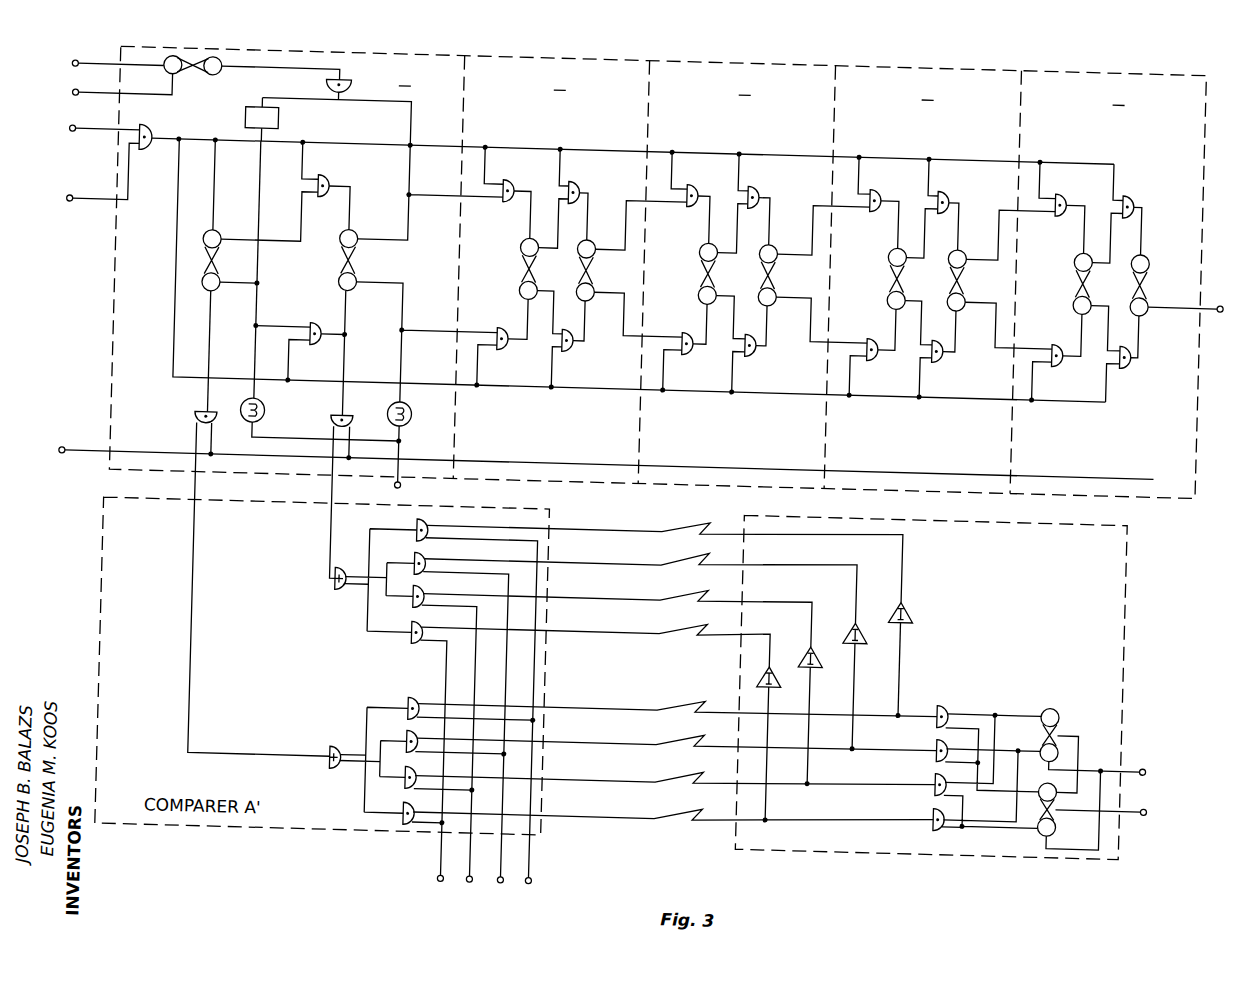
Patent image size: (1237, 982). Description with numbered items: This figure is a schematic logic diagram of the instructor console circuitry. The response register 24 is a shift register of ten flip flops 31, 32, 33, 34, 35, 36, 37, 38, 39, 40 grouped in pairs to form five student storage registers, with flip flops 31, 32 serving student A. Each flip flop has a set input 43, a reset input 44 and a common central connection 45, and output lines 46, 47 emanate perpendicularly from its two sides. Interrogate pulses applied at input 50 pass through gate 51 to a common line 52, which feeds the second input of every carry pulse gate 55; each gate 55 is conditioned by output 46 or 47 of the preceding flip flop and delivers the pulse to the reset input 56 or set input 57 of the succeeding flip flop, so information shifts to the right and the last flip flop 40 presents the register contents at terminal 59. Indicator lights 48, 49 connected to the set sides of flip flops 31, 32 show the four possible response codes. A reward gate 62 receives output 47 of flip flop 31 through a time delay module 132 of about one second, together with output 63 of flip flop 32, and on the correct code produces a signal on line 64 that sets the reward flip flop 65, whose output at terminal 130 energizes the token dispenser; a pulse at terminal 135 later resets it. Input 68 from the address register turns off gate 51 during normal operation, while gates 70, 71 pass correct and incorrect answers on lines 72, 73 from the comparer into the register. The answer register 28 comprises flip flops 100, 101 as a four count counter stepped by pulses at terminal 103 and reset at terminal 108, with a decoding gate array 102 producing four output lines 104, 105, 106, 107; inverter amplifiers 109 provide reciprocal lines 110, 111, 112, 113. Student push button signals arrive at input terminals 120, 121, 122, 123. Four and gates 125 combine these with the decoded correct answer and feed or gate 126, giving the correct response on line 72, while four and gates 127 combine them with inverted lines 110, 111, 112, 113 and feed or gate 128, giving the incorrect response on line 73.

The response register 24 is at (1140, 484).
The answer register 28 is at (1128, 571).
The flip flop 31 is at (198, 298).
The flip flop 32 is at (333, 299).
The flip flop 33 is at (513, 293).
The flip flop 34 is at (591, 289).
The flip flop 35 is at (692, 292).
The flip flop 36 is at (769, 292).
The flip flop 37 is at (881, 292).
The flip flop 38 is at (962, 290).
The flip flop 39 is at (1067, 292).
The last flip flop 40 is at (1145, 289).
The set input 43 is at (203, 310).
The reset input 44 is at (198, 242).
The common central connection 45 is at (197, 272).
The output line 46 is at (248, 239).
The output line 47 is at (226, 295).
The indicator light 48 is at (262, 425).
The indicator light 49 is at (410, 420).
The input 50 is at (60, 143).
The gate 51 is at (137, 138).
The common line 52 is at (776, 150).
The carry pulse gate 55 is at (319, 184).
The reset input 56 is at (349, 237).
The set input 57 is at (353, 299).
The terminal 59 is at (1214, 298).
The reward gate 62 is at (316, 90).
The output 63 is at (402, 248).
The line 64 is at (242, 75).
The reward flip flop 65 is at (155, 83).
The input 68 is at (59, 213).
The gate 70 is at (193, 423).
The gate 71 is at (330, 423).
The output line 72 is at (192, 554).
The output line 73 is at (329, 556).
The flip flop 100 is at (1054, 834).
The flip flop 101 is at (1058, 697).
The gate array 102 is at (930, 832).
The terminal 103 is at (1153, 802).
The output line 104 is at (621, 811).
The output line 105 is at (620, 776).
The output line 106 is at (620, 741).
The output line 107 is at (621, 706).
The terminal 108 is at (1152, 752).
The inverter amplifier 109 is at (920, 626).
The reciprocal signal output line 110 is at (619, 634).
The reciprocal signal output line 111 is at (618, 599).
The reciprocal signal output line 112 is at (617, 563).
The reciprocal signal output line 113 is at (619, 528).
The input terminal 120 is at (448, 890).
The input terminal 121 is at (483, 889).
The input terminal 122 is at (515, 889).
The input terminal 123 is at (545, 890).
The and gate 125 is at (405, 700).
The or gate 126 is at (342, 751).
The and gate 127 is at (402, 644).
The or gate 128 is at (344, 600).
The terminal 130 is at (62, 107).
The time delay module 132 is at (269, 128).
The terminal 135 is at (61, 78).